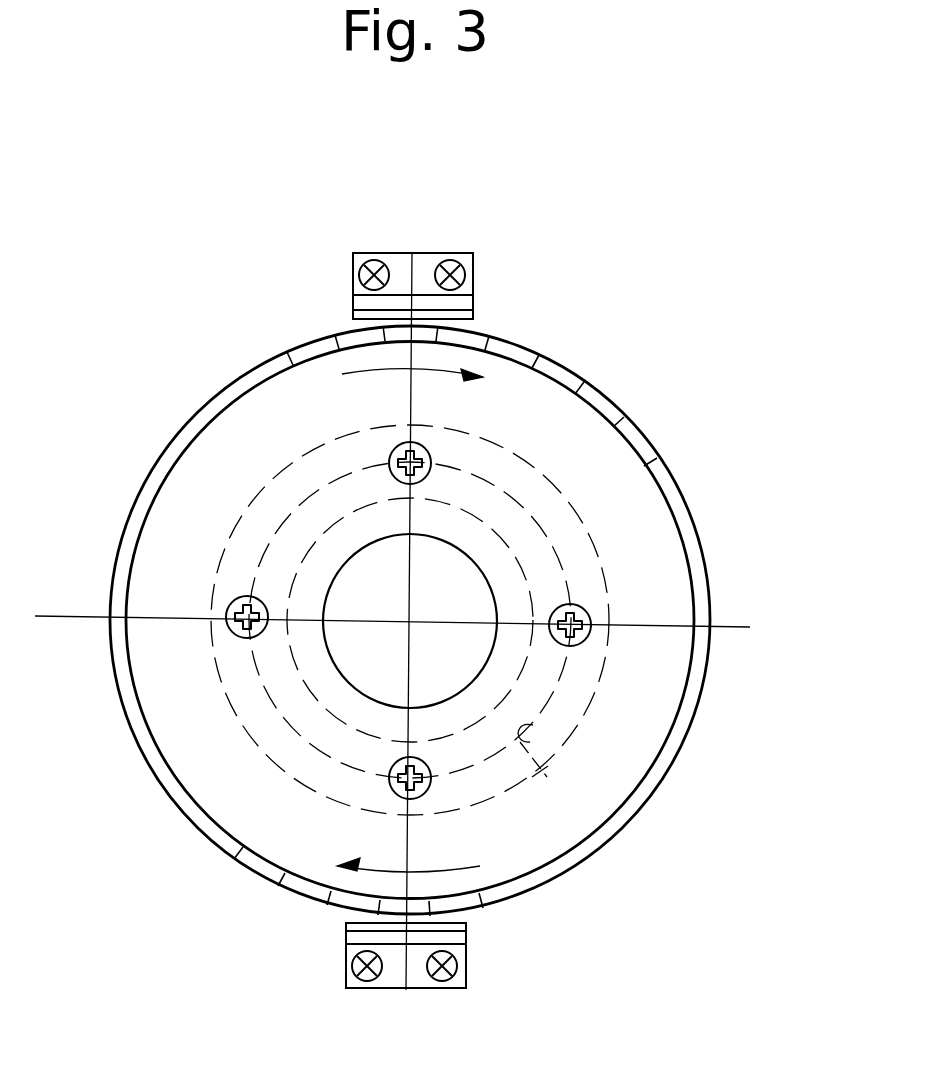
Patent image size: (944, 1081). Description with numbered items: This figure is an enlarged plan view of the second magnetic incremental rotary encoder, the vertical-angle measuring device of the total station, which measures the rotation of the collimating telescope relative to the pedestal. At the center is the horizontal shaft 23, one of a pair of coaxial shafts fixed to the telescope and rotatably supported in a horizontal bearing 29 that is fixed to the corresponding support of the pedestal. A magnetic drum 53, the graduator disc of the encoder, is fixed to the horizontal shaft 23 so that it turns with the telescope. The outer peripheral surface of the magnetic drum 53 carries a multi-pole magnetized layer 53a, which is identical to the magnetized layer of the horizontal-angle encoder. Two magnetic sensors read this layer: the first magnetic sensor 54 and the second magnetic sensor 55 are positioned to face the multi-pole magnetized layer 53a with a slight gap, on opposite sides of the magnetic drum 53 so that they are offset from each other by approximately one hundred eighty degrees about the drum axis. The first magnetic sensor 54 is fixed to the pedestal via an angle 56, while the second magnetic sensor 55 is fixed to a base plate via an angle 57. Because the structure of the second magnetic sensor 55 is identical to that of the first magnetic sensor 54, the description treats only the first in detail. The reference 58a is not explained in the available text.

The horizontal shaft 23 is at (460, 605).
The horizontal bearing 29 is at (540, 690).
The magnetic drum 53 is at (638, 522).
The multi-pole magnetized layer 53a is at (647, 437).
The first magnetic sensor 54 is at (460, 305).
The second magnetic sensor 55 is at (340, 920).
The angle 56 is at (473, 258).
The angle 57 is at (350, 955).
The detecting portion 58a is at (540, 776).